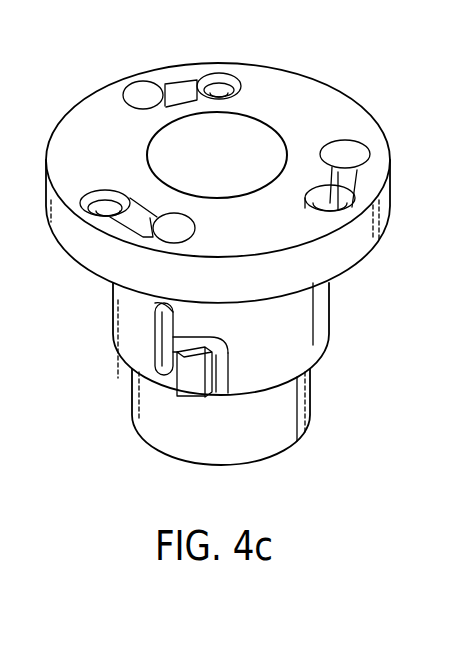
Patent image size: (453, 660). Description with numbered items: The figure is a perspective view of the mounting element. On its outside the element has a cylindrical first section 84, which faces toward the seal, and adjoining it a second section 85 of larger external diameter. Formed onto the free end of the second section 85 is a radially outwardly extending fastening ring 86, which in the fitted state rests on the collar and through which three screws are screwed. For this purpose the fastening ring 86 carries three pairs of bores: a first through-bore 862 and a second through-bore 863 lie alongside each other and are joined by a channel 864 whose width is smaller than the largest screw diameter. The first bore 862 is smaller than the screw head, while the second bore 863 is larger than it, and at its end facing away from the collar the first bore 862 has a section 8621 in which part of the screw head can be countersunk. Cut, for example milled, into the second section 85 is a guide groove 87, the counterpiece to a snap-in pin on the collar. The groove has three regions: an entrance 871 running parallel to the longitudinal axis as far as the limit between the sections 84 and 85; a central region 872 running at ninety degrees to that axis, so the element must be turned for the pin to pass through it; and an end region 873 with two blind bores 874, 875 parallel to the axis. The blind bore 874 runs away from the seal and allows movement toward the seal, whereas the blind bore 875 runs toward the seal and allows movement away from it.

The cylindrical first section 84 is at (160, 430).
The second section 85 is at (331, 297).
The fastening ring 86 is at (102, 107).
The first through-bore 862 is at (215, 100).
The countersink section 8621 is at (227, 80).
The second through-bore 863 is at (137, 92).
The channel 864 is at (183, 88).
The guide groove 87 is at (161, 399).
The entrance 871 is at (222, 378).
The central region 872 is at (207, 336).
The end region 873 is at (155, 340).
The blind bore 874 is at (155, 313).
The blind bore 875 is at (153, 374).